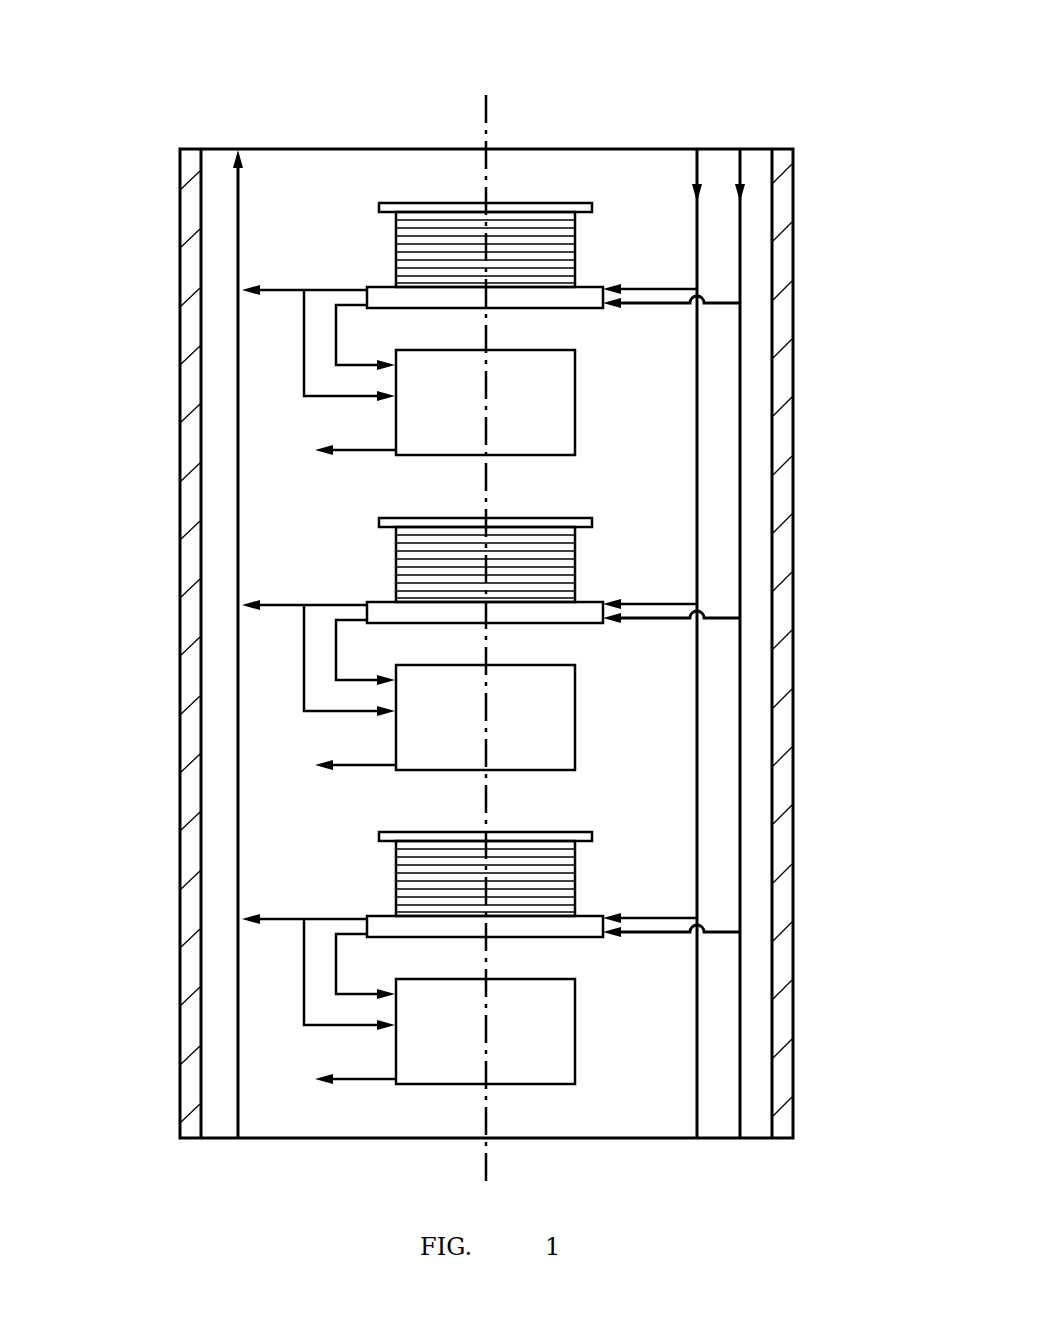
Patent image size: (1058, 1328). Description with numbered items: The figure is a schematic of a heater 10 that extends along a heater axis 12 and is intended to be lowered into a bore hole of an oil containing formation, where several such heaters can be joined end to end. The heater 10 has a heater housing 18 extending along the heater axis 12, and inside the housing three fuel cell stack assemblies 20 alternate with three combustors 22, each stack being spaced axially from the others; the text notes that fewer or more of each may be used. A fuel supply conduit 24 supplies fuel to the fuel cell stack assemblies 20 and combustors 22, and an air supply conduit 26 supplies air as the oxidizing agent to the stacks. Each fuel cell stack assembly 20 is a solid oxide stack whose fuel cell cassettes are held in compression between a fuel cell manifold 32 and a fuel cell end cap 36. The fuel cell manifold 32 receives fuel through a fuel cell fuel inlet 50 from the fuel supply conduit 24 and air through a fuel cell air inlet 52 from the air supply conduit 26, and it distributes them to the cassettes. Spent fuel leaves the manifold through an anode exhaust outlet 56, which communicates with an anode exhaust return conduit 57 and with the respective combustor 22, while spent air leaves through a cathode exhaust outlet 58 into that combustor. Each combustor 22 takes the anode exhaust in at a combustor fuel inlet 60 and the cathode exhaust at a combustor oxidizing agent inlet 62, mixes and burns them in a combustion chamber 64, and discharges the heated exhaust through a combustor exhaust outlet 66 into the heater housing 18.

The heater 10 is at (842, 91).
The heater axis 12 is at (485, 115).
The heater housing 18 is at (185, 262).
The fuel cell stack assembly 20 is at (596, 231).
The combustor 22 is at (603, 376).
The fuel supply conduit 24 is at (696, 163).
The air supply conduit 26 is at (739, 162).
The fuel cell manifold 32 is at (396, 294).
The fuel cell end cap 36 is at (379, 205).
The fuel cell fuel inlet 50 is at (605, 287).
The fuel cell air inlet 52 is at (605, 306).
The anode exhaust outlet 56 is at (367, 289).
The anode exhaust return conduit 57 is at (238, 197).
The cathode exhaust outlet 58 is at (368, 305).
The combustor fuel inlet 60 is at (393, 397).
The combustor oxidizing agent inlet 62 is at (393, 366).
The combustion chamber 64 is at (420, 425).
The combustor exhaust outlet 66 is at (393, 452).